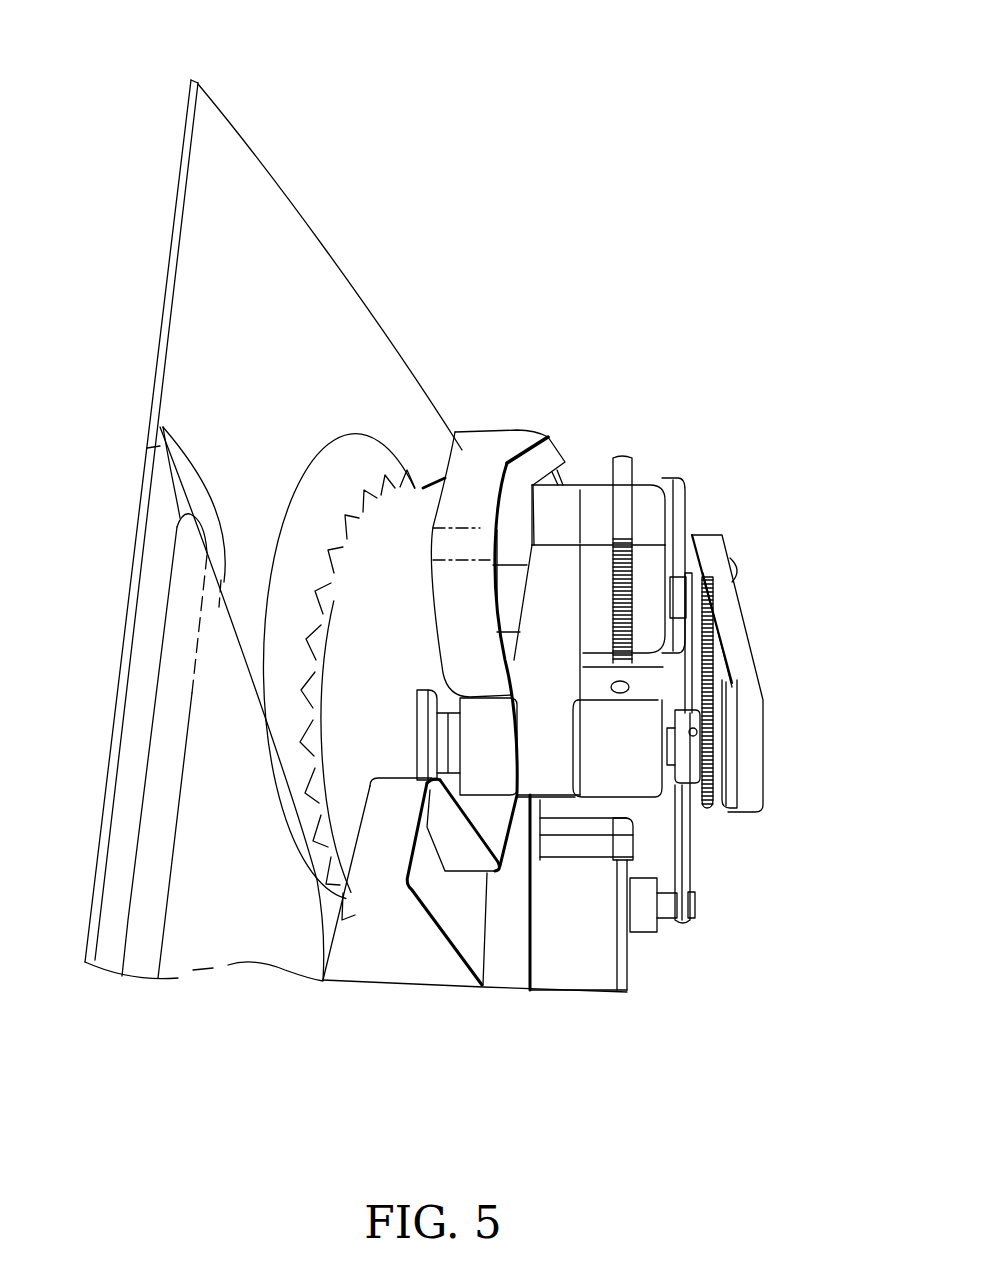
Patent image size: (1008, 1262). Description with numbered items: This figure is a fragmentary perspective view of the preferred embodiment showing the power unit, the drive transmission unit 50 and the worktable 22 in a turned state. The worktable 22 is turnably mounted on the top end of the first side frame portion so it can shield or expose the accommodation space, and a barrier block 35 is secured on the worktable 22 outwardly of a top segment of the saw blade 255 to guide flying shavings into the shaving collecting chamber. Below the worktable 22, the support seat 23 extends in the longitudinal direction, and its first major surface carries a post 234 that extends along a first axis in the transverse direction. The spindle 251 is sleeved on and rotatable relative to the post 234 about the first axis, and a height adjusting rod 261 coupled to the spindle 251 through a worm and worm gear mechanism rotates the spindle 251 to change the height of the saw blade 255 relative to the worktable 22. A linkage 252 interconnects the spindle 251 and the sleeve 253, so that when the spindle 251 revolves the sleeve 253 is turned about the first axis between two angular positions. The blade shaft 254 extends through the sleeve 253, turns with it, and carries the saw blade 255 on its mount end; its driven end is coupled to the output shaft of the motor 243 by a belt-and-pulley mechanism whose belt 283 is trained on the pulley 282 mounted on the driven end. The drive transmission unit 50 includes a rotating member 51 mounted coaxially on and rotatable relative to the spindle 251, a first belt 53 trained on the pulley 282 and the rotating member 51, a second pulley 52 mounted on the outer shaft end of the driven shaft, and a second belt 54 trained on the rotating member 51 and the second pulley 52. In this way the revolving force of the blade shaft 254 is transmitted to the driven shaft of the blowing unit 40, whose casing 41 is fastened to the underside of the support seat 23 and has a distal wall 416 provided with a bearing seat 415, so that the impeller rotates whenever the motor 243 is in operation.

The worktable 22 is at (185, 152).
The barrier block 35 is at (163, 427).
The support seat 23 is at (445, 480).
The post 234 is at (512, 575).
The motor 243 is at (573, 490).
The height adjusting rod 261 is at (617, 458).
The spindle 251 is at (647, 553).
The drive transmission unit 50 is at (678, 574).
The rotating member 51 is at (678, 590).
The saw blade 255 is at (368, 484).
The belt 283 is at (743, 647).
The linkage 252 is at (540, 655).
The first belt 53 is at (727, 700).
The blade shaft 254 is at (450, 733).
The pulley 282 is at (725, 782).
The sleeve 253 is at (482, 753).
The second belt 54 is at (687, 863).
The second pulley 52 is at (672, 912).
The blowing unit 40 is at (587, 992).
The bearing seat 415 is at (647, 913).
The casing 41 is at (560, 993).
The distal wall 416 is at (625, 993).